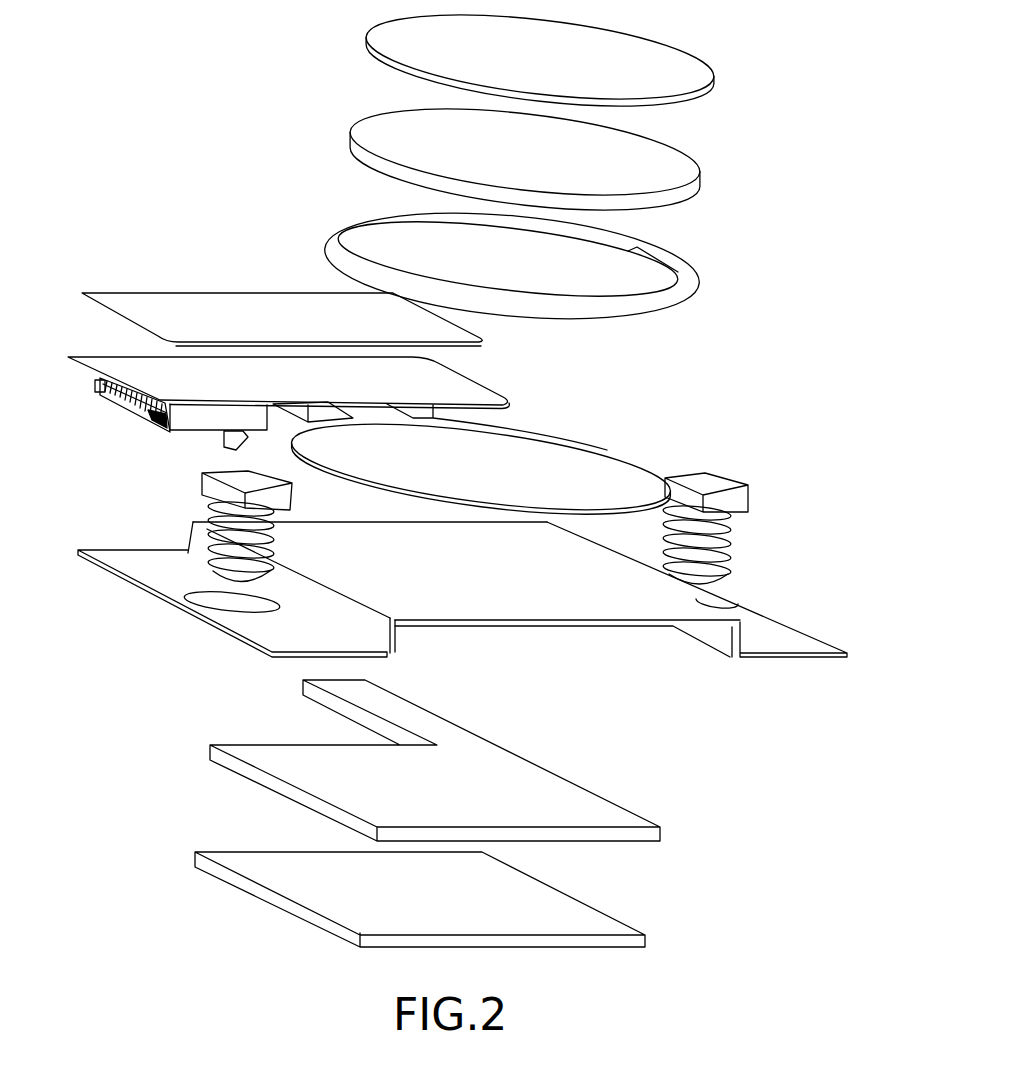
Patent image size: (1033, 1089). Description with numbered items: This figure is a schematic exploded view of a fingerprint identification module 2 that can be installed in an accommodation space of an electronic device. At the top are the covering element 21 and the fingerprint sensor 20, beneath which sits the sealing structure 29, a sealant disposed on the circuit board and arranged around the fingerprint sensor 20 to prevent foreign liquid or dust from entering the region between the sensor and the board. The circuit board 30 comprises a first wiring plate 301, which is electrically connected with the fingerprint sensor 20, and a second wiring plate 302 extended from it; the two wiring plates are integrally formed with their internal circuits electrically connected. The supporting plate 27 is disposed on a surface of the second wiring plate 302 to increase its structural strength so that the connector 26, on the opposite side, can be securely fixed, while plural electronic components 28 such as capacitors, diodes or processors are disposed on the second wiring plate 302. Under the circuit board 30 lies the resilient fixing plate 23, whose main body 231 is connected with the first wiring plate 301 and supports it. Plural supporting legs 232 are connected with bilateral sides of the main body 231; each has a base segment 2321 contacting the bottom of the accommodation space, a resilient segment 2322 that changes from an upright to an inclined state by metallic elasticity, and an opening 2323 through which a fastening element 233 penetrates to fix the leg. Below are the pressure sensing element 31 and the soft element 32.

The fingerprint identification module 2 is at (215, 84).
The covering element 21 is at (614, 50).
The fingerprint sensor 20 is at (653, 165).
The sealing structure 29 is at (690, 297).
The supporting plate 27 is at (215, 307).
The circuit board 30 is at (369, 435).
The second wiring plate 302 is at (470, 388).
The first wiring plate 301 is at (608, 470).
The electronic components 28 is at (318, 415).
The connector 26 is at (97, 378).
The fastening elements 233 is at (227, 480).
The resilient fixing plate 23 is at (462, 619).
The main body 231 is at (573, 622).
The supporting legs 232 is at (773, 662).
The base segment 2321 is at (232, 607).
The resilient segment 2322 is at (391, 643).
The opening 2323 is at (235, 593).
The pressure sensing element 31 is at (537, 783).
The soft element 32 is at (558, 908).